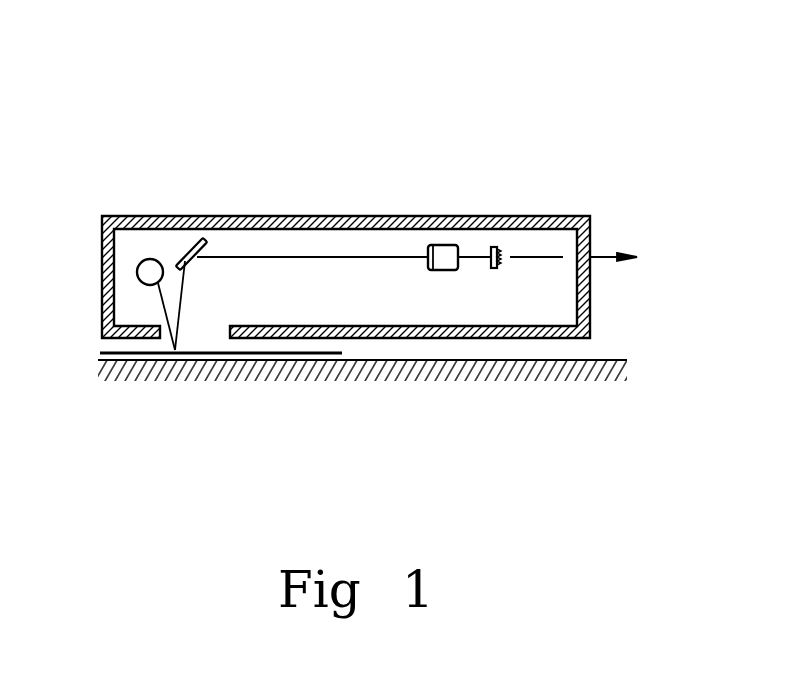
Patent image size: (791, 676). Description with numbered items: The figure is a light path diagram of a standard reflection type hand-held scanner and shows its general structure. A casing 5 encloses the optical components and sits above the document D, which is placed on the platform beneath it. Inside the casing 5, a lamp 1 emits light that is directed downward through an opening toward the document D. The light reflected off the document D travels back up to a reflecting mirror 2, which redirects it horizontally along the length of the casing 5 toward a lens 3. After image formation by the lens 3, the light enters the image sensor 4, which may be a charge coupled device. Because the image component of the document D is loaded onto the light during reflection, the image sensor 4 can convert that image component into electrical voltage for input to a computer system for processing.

The lamp 1 is at (143, 260).
The reflecting mirror 2 is at (188, 243).
The lens 3 is at (445, 245).
The image sensor 4 is at (495, 247).
The casing 5 is at (586, 217).
The document D is at (133, 355).